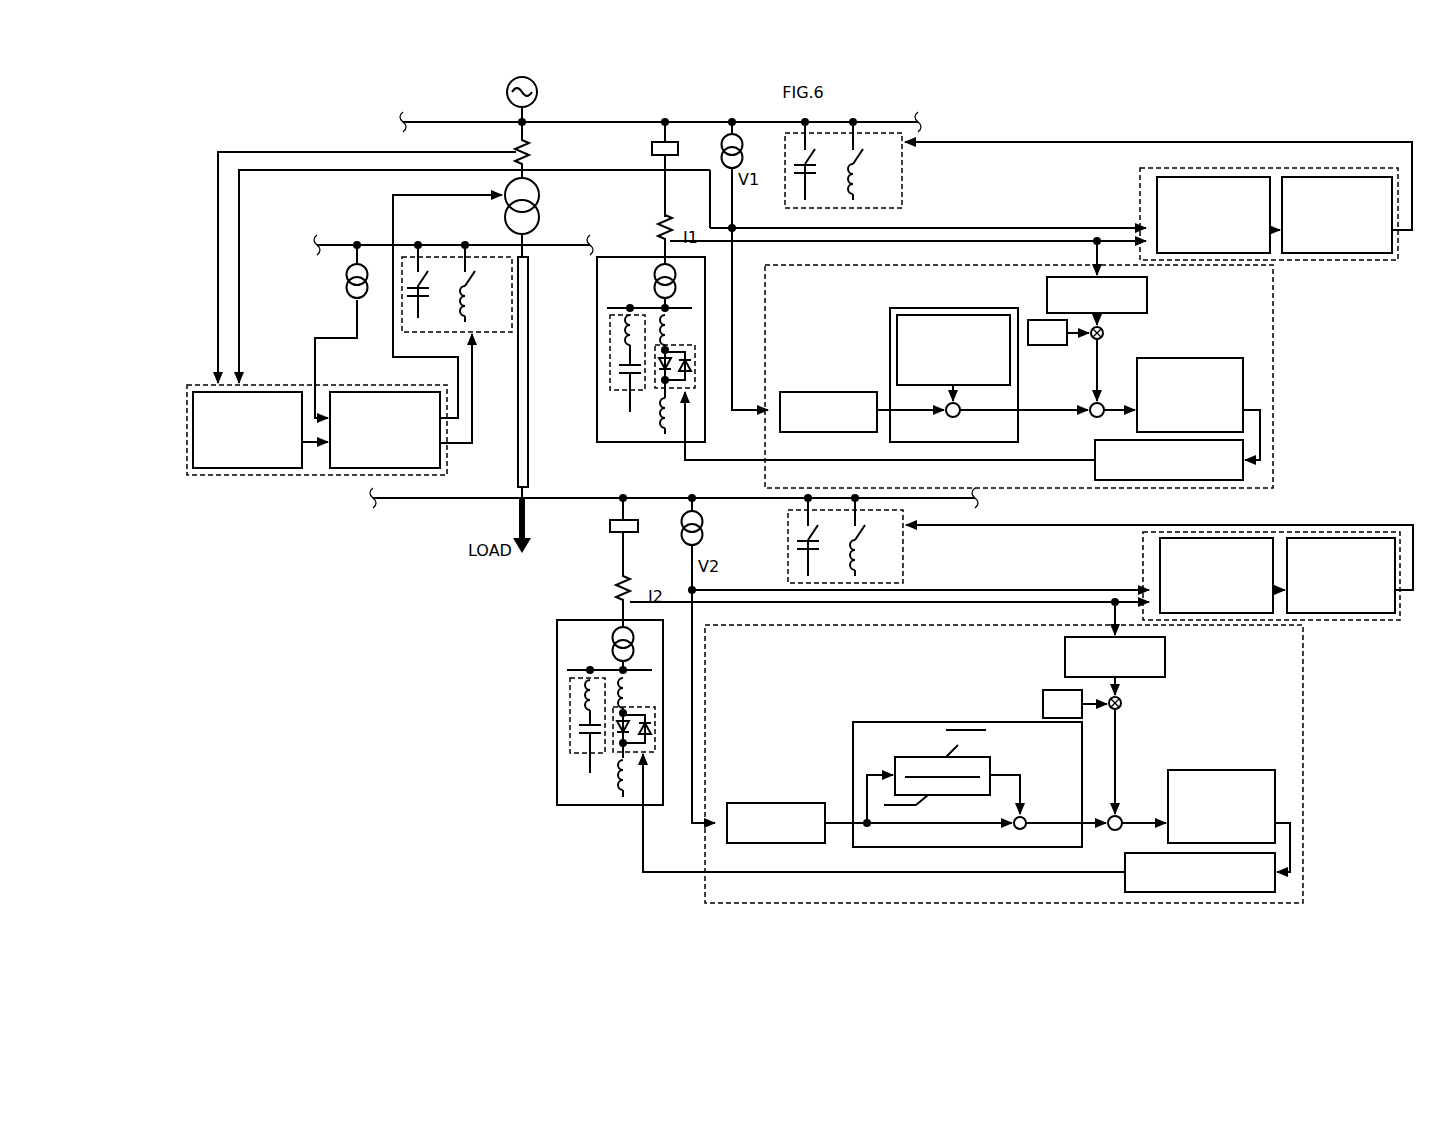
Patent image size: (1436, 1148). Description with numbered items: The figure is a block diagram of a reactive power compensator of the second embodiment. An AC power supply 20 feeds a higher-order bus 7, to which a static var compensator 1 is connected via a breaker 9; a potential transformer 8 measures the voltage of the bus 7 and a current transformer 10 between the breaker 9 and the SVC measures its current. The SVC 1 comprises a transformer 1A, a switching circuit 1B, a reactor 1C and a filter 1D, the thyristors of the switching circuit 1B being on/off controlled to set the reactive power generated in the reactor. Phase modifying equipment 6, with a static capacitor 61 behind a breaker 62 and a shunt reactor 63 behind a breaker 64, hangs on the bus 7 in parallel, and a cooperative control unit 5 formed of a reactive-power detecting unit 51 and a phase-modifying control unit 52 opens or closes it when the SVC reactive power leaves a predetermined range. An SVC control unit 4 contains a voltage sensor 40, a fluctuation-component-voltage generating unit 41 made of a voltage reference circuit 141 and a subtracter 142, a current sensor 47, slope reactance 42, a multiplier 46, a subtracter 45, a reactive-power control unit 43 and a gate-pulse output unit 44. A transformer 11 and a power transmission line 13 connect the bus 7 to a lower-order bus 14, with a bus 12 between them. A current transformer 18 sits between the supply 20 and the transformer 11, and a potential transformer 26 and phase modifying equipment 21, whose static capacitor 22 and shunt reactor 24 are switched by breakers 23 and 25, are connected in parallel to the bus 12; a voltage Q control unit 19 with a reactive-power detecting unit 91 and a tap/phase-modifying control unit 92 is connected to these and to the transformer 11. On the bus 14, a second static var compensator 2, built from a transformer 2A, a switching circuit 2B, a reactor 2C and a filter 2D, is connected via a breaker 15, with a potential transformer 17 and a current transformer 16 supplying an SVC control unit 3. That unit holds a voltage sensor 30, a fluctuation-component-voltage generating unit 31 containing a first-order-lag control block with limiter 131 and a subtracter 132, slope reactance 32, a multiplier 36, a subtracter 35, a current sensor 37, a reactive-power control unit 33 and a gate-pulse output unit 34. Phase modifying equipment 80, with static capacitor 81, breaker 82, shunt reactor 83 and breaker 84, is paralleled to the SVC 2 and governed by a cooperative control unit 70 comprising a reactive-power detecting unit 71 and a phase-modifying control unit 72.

The static var compensator 1 is at (640, 358).
The transformer 1A is at (676, 276).
The switching circuit 1B is at (690, 345).
The reactor of first compensator 1C is at (660, 432).
The filter 1D is at (610, 352).
The static var compensator 2 is at (599, 725).
The transformer 2A is at (634, 639).
The switching circuit 2B is at (650, 707).
The reactor 2C is at (618, 795).
The filter 2D is at (570, 716).
The SVC control unit 3 is at (985, 752).
The SVC control unit 4 is at (992, 364).
The cooperative control unit 5 is at (1158, 213).
The phase modifying equipment 6 is at (860, 165).
The bus 7 is at (686, 120).
The potential transformer 8 is at (722, 158).
The breaker 9 is at (680, 148).
The current transformer 10 is at (655, 215).
The transformer 11 is at (540, 189).
The bus 12 is at (563, 238).
The power transmission line 13 is at (530, 306).
The bus 14 is at (577, 496).
The breaker 15 is at (638, 530).
The current transformer 16 is at (613, 582).
The potential transformer 17 is at (682, 522).
The current transformer 18 is at (530, 144).
The voltage Q (reactive power) control unit 19 is at (344, 353).
The AC power supply 20 is at (537, 90).
The phase modifying equipment 21 is at (457, 307).
The static capacitor 22 is at (424, 306).
The breaker 23 is at (426, 275).
The shunt reactor 24 is at (480, 305).
The breaker 25 is at (474, 275).
The potential transformer 26 is at (345, 278).
The voltage sensor 30 is at (795, 803).
The fluctuation-component-voltage generating unit 31 is at (953, 774).
The slope reactance 32 is at (1050, 690).
The reactive-power control unit 33 is at (1240, 770).
The gate-pulse output unit 34 is at (1125, 884).
The subtracter 35 is at (1120, 830).
The multiplier 36 is at (1122, 704).
The current sensor 37 is at (1165, 662).
The voltage sensor 40 is at (842, 392).
The fluctuation-component-voltage generating unit 41 is at (915, 308).
The slope reactance 42 is at (1052, 345).
The reactive-power control unit 43 is at (1208, 358).
The gate-pulse output unit 44 is at (1095, 472).
The subtracter 45 is at (1100, 418).
The multiplier 46 is at (1104, 334).
The current sensor 47 is at (1147, 298).
The reactive-power detecting unit 51 is at (1240, 177).
The phase-modifying control unit 52 is at (1355, 177).
The static capacitor 61 is at (811, 183).
The breaker 62 is at (812, 150).
The shunt reactor 63 is at (858, 183).
The breaker 64 is at (861, 150).
The cooperative control unit 70 is at (1159, 599).
The reactive-power detecting unit 71 is at (1160, 560).
The phase-modifying control unit 72 is at (1343, 613).
The phase modifying equipment 80 is at (868, 540).
The static capacitor 81 is at (814, 559).
The breaker 82 is at (815, 527).
The shunt reactor 83 is at (860, 559).
The breaker 84 is at (863, 527).
The reactive-power detecting unit 91 is at (232, 468).
The tap/phase-modifying control unit 92 is at (348, 468).
The first-order-lag control block with limiter 131 is at (918, 757).
The subtracter 132 is at (1028, 818).
The voltage reference circuit 141 is at (972, 392).
The subtracter 142 is at (956, 418).